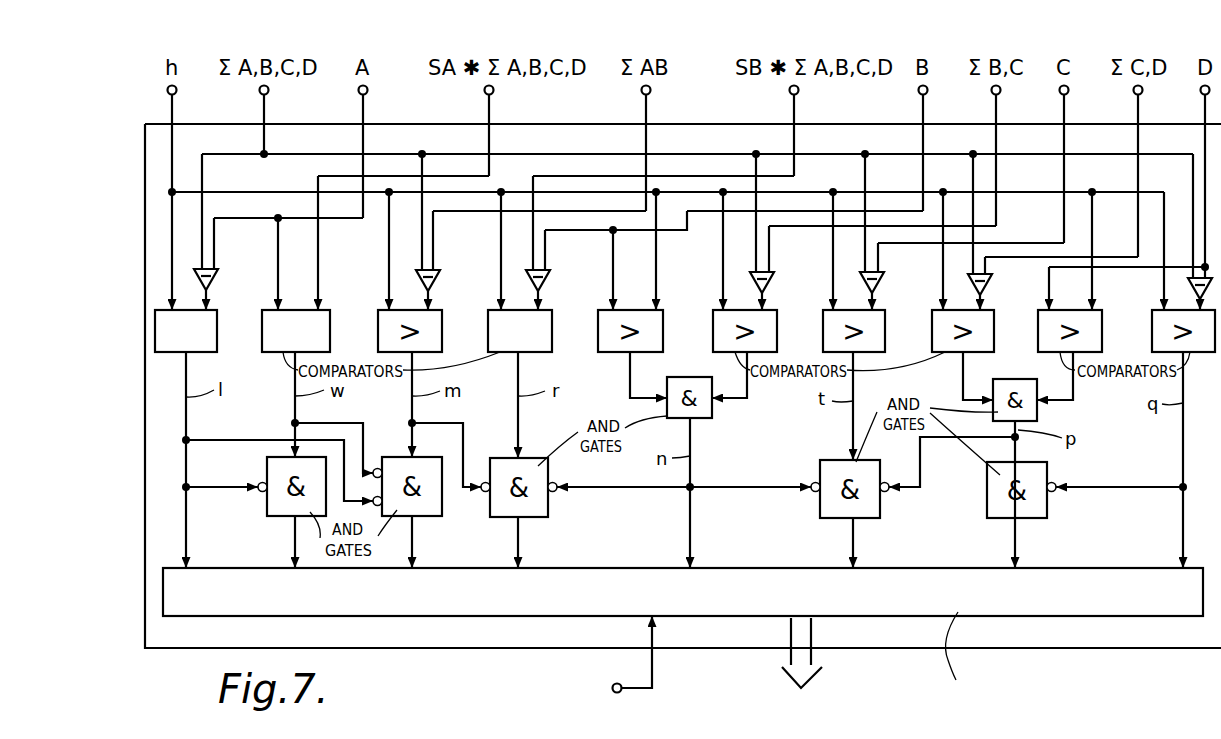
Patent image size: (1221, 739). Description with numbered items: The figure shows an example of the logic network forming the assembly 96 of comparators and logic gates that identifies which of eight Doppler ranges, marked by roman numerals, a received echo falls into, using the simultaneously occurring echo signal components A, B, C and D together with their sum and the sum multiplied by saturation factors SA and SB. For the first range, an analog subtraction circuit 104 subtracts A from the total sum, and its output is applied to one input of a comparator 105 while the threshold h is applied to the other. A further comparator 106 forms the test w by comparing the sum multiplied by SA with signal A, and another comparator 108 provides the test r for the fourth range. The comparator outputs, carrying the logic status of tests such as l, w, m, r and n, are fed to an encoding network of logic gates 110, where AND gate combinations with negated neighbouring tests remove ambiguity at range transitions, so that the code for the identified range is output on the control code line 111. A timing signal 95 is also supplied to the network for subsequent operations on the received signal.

The timing signal 95 is at (638, 689).
The assembly of comparators and logic gates 96 is at (463, 648).
The analog subtraction circuit 104 is at (218, 280).
The comparator 105 is at (200, 350).
The comparator 106 is at (330, 320).
The comparator 108 is at (545, 318).
The encoding network of logic gates 110 is at (1077, 600).
The control code line 111 is at (813, 656).